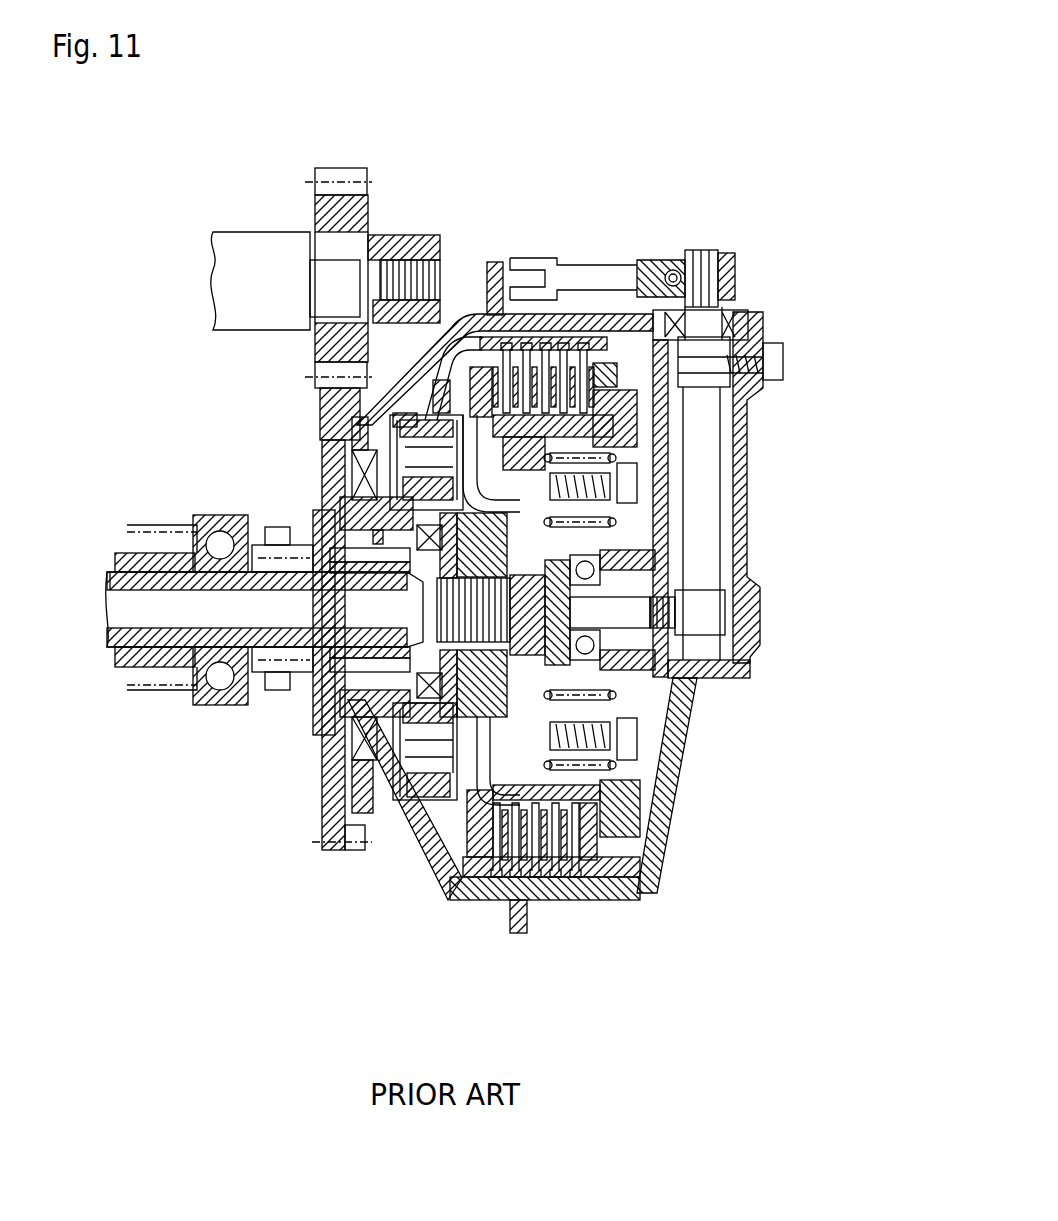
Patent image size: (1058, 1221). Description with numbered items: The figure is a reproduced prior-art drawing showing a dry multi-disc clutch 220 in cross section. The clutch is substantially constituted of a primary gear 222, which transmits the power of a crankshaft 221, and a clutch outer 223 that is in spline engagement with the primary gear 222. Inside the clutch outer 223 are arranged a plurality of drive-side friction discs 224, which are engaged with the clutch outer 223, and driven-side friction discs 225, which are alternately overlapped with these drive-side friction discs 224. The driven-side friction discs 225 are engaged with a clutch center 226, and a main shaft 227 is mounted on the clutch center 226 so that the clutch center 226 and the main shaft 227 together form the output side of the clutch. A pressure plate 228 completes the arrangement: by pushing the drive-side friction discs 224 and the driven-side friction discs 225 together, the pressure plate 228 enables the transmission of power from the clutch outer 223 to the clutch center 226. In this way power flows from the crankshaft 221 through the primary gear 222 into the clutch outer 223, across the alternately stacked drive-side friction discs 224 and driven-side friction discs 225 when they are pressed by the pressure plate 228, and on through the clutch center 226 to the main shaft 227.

The dry multi-disc clutch 220 is at (656, 132).
The crankshaft 221 is at (245, 245).
The primary gear 222 is at (322, 440).
The clutch outer 223 is at (400, 825).
The drive-side friction discs 224 is at (505, 865).
The driven-side friction discs 225 is at (635, 785).
The clutch center 226 is at (458, 880).
The main shaft 227 is at (160, 555).
The pressure plate 228 is at (632, 820).